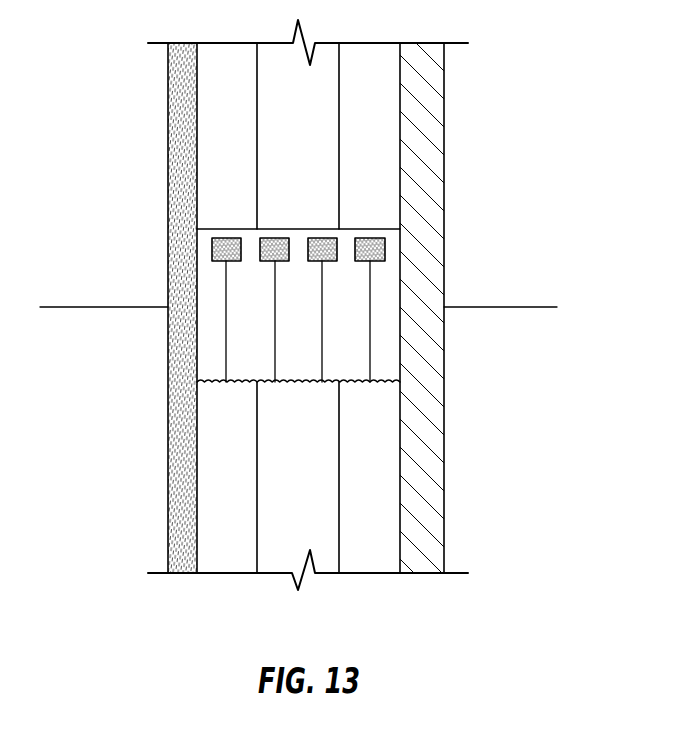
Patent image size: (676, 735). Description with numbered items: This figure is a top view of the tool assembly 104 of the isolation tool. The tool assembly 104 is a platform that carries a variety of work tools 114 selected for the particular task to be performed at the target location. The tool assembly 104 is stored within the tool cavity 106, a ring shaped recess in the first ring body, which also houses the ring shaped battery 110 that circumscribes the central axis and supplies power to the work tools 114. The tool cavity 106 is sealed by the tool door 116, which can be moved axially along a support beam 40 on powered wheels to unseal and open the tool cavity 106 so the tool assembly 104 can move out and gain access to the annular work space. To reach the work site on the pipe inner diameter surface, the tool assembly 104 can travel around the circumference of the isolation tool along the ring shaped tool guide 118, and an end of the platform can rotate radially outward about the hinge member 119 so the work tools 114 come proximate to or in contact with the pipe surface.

The support beam 40 is at (498, 307).
The tool assembly 104 is at (383, 162).
The tool cavity 106 is at (323, 459).
The battery 110 is at (173, 150).
The work tools 114 is at (274, 238).
The tool door 116 is at (438, 205).
The tool guide 118 is at (257, 486).
The hinge member 119 is at (222, 384).